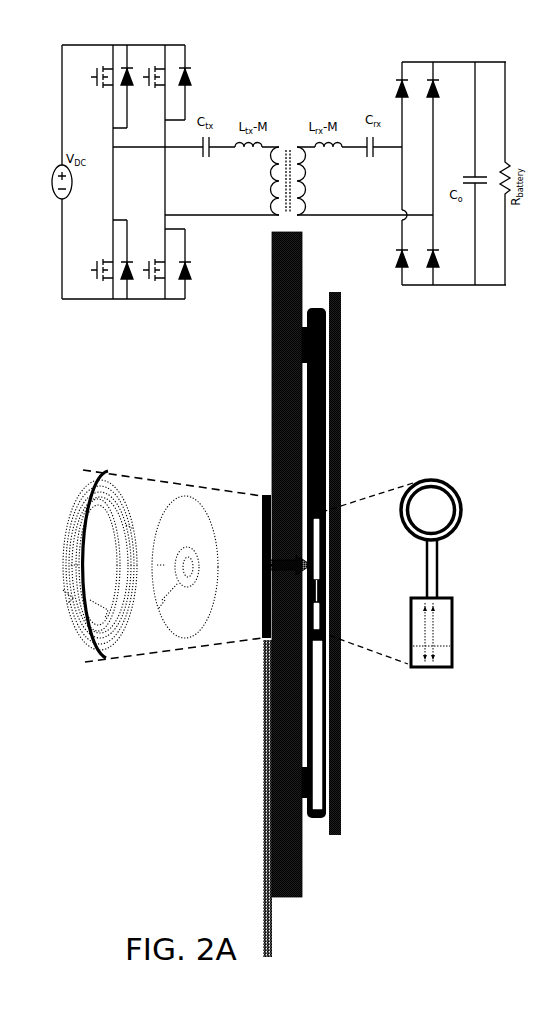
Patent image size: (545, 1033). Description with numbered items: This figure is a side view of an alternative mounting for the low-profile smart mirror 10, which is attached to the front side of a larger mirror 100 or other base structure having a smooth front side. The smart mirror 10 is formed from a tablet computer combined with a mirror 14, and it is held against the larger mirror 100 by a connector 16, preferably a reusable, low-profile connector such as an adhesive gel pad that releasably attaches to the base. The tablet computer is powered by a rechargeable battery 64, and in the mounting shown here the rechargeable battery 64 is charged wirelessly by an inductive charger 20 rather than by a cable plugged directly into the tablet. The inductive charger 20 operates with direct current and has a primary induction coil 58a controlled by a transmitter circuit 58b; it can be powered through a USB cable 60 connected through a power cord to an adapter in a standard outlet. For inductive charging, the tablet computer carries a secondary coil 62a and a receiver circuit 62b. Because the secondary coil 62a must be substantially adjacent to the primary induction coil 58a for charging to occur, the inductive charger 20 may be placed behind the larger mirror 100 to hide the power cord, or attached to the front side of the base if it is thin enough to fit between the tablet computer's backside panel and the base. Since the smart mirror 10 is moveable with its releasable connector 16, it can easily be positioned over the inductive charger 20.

The larger mirror 100 is at (287, 325).
The smart mirror 10 is at (358, 400).
The mirror 14 is at (535, 525).
The connector 16 is at (303, 783).
The inductive charger 20 is at (258, 610).
The primary induction coil 58a is at (165, 523).
The transmitter circuit 58b is at (98, 525).
The USB cable 60 is at (267, 743).
The secondary coil 62a is at (317, 550).
The receiver circuit 62b is at (318, 618).
The rechargeable battery 64 is at (316, 692).